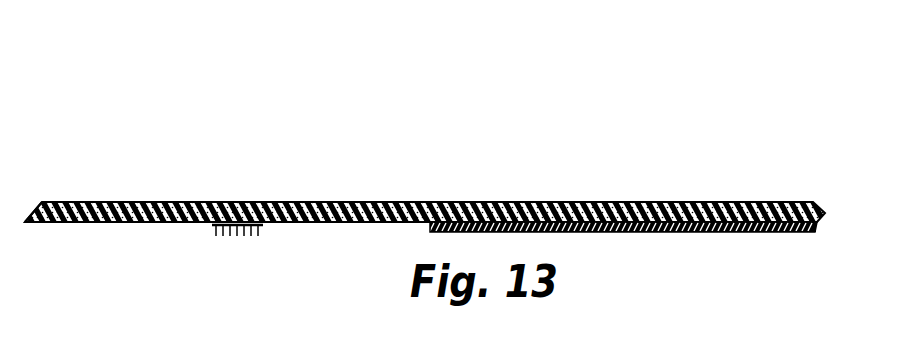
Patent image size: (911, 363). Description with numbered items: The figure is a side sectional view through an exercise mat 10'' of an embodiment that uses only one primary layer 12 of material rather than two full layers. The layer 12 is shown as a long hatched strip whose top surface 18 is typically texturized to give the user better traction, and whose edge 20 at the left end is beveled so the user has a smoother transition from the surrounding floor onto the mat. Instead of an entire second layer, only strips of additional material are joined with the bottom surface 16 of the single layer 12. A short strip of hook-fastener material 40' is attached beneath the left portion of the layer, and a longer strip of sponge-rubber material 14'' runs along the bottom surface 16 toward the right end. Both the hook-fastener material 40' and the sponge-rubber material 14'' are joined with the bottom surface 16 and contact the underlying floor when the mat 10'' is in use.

The mat 10'' is at (425, 138).
The primary layer 12 is at (470, 202).
The strip of sponge-rubber material 14'' is at (623, 271).
The bottom surface 16 is at (85, 222).
The top surface 18 is at (165, 203).
The edges 20 is at (35, 208).
The strip of hook-fastener material 40' is at (270, 263).